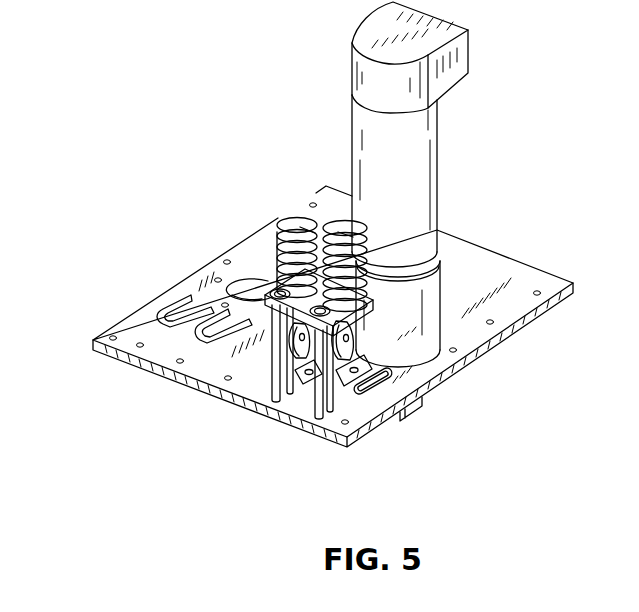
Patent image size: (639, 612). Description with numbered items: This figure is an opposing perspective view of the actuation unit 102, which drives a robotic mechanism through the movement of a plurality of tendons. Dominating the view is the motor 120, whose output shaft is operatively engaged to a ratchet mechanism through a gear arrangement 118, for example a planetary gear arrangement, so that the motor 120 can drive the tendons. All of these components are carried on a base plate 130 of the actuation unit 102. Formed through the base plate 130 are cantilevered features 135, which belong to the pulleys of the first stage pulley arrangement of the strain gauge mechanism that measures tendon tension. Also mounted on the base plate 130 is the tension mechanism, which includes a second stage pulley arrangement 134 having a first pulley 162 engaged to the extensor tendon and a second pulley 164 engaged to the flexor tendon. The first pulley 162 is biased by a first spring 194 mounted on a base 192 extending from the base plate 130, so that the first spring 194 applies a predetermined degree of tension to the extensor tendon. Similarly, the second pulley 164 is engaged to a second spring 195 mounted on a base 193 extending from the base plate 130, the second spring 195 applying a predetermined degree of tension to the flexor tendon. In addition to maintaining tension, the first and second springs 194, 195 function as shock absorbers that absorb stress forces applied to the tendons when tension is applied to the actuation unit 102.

The actuation unit 102 is at (122, 66).
The gear arrangement 118 is at (450, 273).
The motor 120 is at (418, 160).
The base plate 130 is at (527, 312).
The second stage pulley arrangement 134 is at (258, 358).
The cantilevered feature 135 is at (303, 392).
The first pulley 162 is at (297, 363).
The second pulley 164 is at (351, 359).
The base 192 is at (346, 226).
The base 193 is at (294, 224).
The first spring 194 is at (275, 283).
The second spring 195 is at (270, 244).